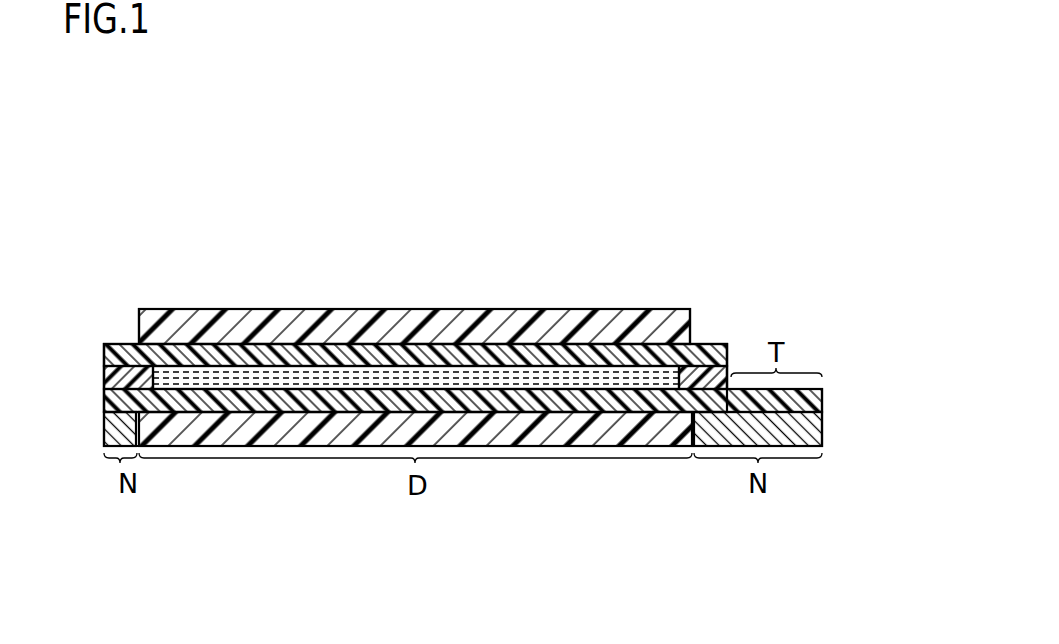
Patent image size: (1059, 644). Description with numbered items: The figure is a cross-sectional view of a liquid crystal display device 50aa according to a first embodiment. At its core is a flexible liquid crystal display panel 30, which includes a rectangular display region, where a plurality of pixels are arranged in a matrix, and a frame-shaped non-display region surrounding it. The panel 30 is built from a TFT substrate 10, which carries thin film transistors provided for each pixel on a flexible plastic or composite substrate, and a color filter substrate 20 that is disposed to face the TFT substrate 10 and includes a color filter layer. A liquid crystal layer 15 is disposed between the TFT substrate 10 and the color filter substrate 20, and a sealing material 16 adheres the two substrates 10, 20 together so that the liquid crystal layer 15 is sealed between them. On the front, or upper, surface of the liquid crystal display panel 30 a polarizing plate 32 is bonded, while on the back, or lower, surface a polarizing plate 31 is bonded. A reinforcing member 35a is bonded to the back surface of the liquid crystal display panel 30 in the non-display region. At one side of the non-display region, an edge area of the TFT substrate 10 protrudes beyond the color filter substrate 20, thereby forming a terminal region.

The liquid crystal display device 50aa is at (196, 179).
The polarizing plate 32 is at (397, 328).
The liquid crystal display panel 30 is at (99, 343).
The color filter substrate 20 is at (610, 353).
The liquid crystal layer 15 is at (492, 378).
The sealing material 16 is at (712, 372).
The TFT substrate 10 is at (800, 399).
The polarizing plate 31 is at (303, 428).
The reinforcing member 35a is at (800, 428).